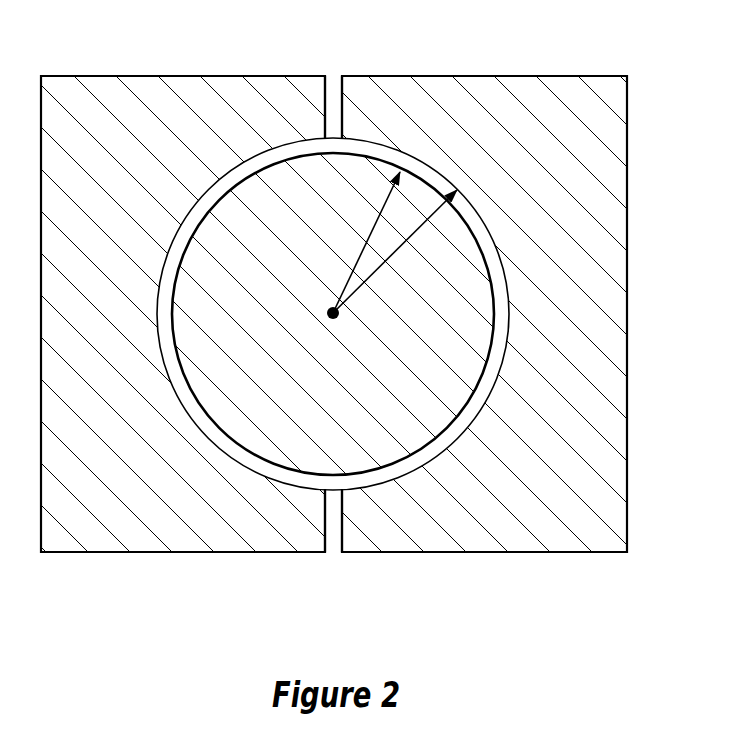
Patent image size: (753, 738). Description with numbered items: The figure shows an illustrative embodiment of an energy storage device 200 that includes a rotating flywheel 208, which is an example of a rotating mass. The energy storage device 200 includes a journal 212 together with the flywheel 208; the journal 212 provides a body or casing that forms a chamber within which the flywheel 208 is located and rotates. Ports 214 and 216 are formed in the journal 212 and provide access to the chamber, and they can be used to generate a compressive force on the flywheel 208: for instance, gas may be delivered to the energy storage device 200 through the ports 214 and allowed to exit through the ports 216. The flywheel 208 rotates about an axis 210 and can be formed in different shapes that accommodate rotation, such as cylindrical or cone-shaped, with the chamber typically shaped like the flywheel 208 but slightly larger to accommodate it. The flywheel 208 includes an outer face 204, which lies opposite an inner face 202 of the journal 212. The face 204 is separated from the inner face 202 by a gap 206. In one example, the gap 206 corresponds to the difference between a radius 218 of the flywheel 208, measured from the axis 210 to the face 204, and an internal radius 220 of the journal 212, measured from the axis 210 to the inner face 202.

The energy storage device 200 is at (627, 213).
The inner face 202 is at (503, 347).
The outer face 204 is at (472, 396).
The gap 206 is at (375, 321).
The flywheel 208 is at (349, 230).
The axis 210 is at (342, 319).
The journal 212 is at (510, 95).
The ports 214 is at (333, 84).
The ports 216 is at (335, 545).
The radius 218 is at (362, 251).
The internal radius 220 is at (392, 257).